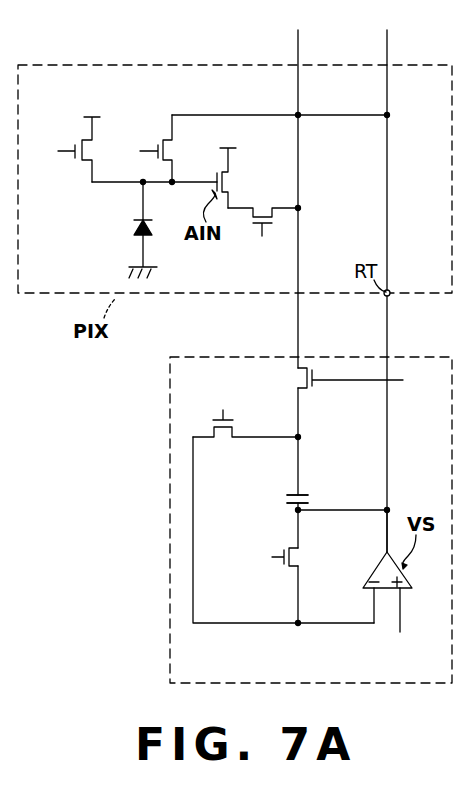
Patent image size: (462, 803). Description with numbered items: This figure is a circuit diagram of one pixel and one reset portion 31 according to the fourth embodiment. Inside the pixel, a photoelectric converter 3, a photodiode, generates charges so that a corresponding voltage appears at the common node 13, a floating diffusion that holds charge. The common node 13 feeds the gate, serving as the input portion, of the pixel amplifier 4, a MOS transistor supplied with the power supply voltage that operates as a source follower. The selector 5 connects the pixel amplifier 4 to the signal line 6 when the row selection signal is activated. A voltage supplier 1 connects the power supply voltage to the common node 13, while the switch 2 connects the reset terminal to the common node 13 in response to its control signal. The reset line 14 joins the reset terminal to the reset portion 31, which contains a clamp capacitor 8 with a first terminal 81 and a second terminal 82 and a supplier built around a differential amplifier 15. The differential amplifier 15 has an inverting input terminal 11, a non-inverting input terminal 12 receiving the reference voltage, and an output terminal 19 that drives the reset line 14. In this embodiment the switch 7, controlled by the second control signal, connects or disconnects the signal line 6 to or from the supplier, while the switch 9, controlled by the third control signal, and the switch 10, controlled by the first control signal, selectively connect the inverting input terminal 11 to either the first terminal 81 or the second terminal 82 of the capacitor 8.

The voltage supplier 1 is at (73, 159).
The switch 2 is at (163, 139).
The photoelectric converter 3 is at (133, 224).
The pixel amplifier 4 is at (215, 171).
The selector 5 is at (262, 206).
The signal line 6 is at (298, 325).
The switch 7 is at (296, 378).
The capacitor 8 is at (285, 500).
The first terminal 81 is at (292, 490).
The second terminal 82 is at (290, 513).
The switch 9 is at (227, 440).
The switch 10 is at (290, 573).
The inverting input terminal 11 is at (370, 601).
The non-inverting input terminal 12 is at (404, 599).
The common node 13 is at (108, 183).
The reset line 14 is at (387, 325).
The differential amplifier 15 is at (372, 575).
The output terminal 19 is at (383, 549).
The reset portion 31 is at (170, 523).